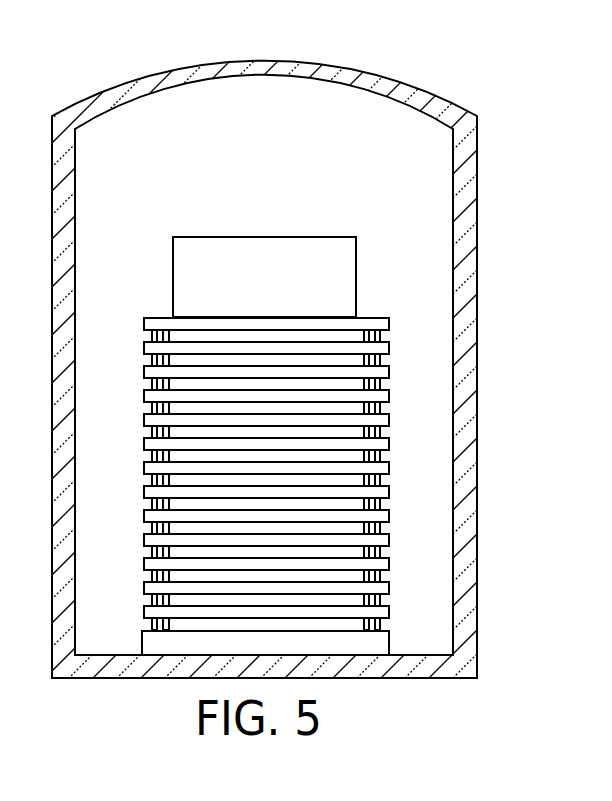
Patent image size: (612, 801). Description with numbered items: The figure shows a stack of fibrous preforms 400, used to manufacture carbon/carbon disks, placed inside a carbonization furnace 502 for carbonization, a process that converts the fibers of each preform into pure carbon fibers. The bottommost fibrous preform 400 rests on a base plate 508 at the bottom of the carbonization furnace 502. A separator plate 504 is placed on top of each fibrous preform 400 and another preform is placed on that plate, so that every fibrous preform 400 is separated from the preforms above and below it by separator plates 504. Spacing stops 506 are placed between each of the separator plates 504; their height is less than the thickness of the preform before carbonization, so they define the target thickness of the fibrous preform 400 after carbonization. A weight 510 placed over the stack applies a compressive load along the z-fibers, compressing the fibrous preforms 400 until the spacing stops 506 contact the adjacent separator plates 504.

The fibrous preform 400 is at (265, 427).
The carbonization furnace 502 is at (455, 112).
The separator plate 504 is at (166, 323).
The spacing stop 506 is at (156, 336).
The base plate 508 is at (376, 640).
The weight 510 is at (310, 248).